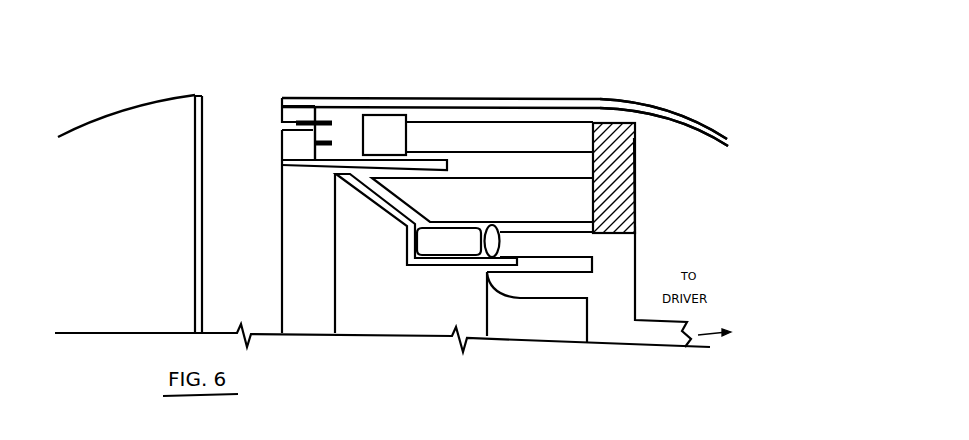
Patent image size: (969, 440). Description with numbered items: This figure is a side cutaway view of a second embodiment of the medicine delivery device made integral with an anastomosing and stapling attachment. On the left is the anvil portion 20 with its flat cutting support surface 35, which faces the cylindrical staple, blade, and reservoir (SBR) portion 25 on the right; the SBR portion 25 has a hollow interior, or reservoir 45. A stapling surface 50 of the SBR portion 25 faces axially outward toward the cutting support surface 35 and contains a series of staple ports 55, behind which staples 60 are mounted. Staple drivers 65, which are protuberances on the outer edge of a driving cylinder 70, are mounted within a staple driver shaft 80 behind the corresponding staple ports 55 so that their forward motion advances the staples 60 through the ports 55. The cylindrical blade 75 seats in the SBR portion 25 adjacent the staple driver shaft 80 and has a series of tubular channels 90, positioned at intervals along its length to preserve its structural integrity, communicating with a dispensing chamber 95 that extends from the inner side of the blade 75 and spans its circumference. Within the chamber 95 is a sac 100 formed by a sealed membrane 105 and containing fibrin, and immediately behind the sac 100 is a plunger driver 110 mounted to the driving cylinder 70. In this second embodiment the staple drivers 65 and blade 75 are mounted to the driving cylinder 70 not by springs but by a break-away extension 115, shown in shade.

The anvil portion 20 is at (108, 130).
The flat cutting support surface 35 is at (208, 137).
The stapling surface 50 is at (273, 147).
The staple ports 55 is at (275, 123).
The staples 60 is at (323, 123).
The staple drivers 65 is at (383, 123).
The staple driver shaft 80 is at (460, 113).
The blade 75 is at (530, 190).
The driving cylinder 70 is at (609, 137).
The staple, blade, and reservoir (SBR) portion 25 is at (657, 107).
The break-away extension 115 is at (634, 138).
The channels 90 is at (382, 193).
The dispensing chamber 95 is at (408, 267).
The sac 100 is at (420, 241).
The sealed membrane 105 is at (443, 254).
The plunger driver 110 is at (547, 241).
The reservoir 45 is at (497, 328).